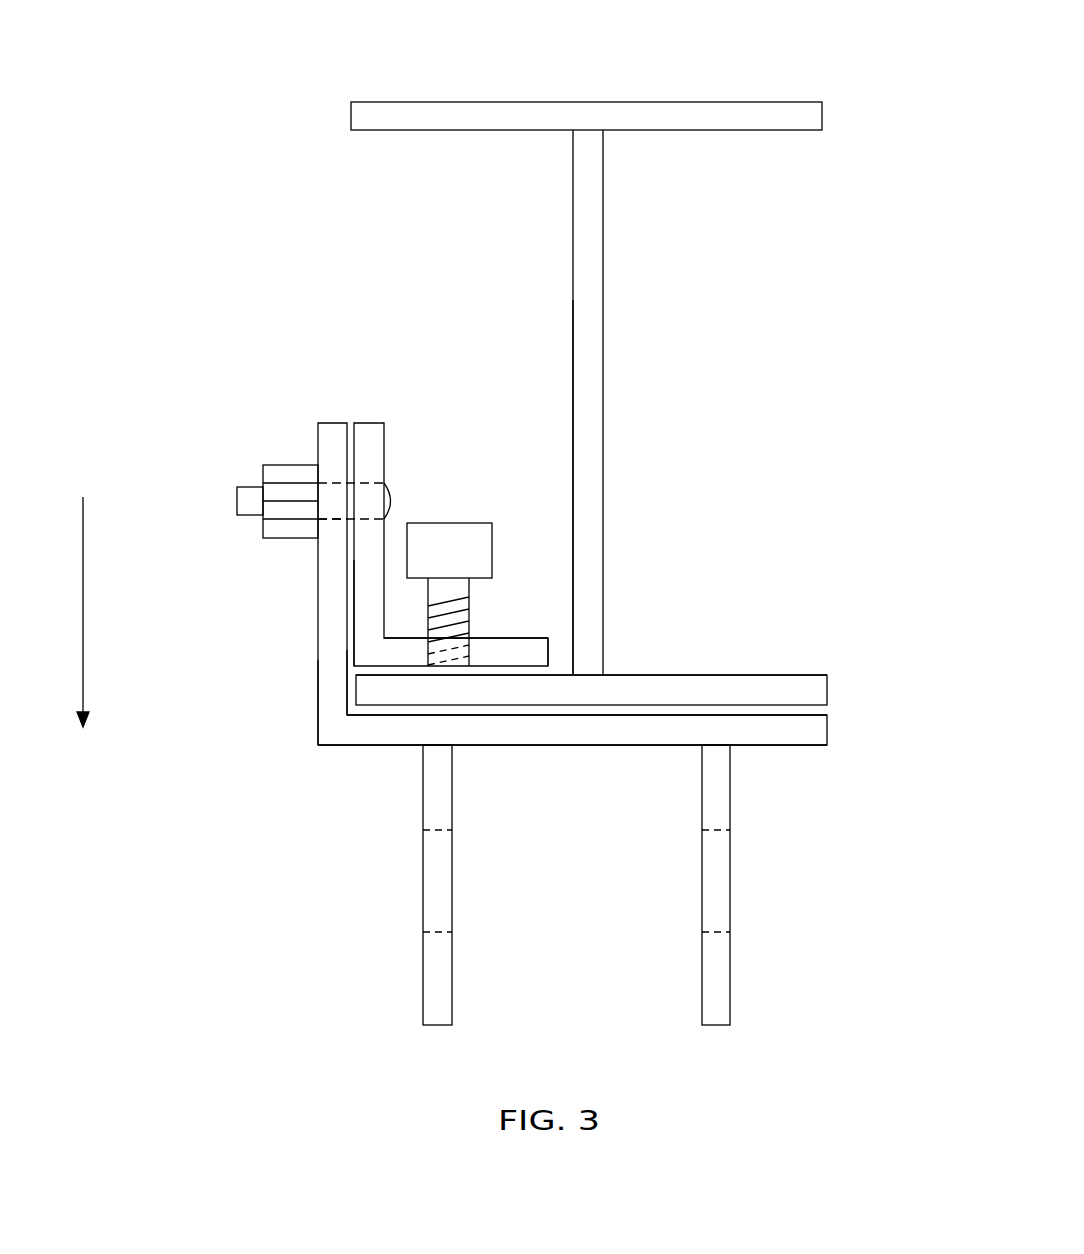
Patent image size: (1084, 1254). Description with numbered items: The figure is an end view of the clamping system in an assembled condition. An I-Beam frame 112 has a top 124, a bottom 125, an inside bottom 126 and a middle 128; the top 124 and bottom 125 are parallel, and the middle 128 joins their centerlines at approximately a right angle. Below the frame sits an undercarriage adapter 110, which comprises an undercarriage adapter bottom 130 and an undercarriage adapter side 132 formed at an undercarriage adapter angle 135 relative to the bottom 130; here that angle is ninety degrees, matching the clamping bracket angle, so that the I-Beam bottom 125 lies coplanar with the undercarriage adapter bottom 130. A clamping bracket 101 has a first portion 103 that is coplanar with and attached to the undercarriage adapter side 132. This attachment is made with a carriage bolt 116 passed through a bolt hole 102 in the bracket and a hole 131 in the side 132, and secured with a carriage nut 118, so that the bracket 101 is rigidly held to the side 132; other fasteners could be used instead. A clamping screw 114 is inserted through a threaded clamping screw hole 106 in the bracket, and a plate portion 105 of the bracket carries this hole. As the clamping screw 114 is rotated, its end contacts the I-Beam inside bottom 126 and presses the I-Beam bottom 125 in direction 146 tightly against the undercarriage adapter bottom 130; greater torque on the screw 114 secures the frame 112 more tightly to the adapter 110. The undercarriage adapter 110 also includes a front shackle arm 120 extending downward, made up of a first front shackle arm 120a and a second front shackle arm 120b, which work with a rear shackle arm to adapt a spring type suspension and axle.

The clamping bracket 101 is at (368, 423).
The bolt hole 102 is at (375, 483).
The first portion 103 is at (378, 608).
The horizontal plate of bracket 105 is at (549, 654).
The threaded clamping screw hole 106 is at (472, 647).
The undercarriage adapter 110 is at (330, 670).
The I-Beam frame 112 is at (603, 331).
The clamping screw 114 is at (447, 523).
The carriage bolt 116 is at (237, 505).
The carriage nut 118 is at (290, 465).
The front shackle arm 120 is at (576, 885).
The first front shackle arm 120a is at (452, 858).
The second front shackle arm 120b is at (702, 903).
The top 124 is at (623, 102).
The bottom 125 is at (827, 703).
The inside bottom 126 is at (712, 675).
The middle 128 is at (603, 510).
The undercarriage adapter bottom 130 is at (787, 745).
The hole 131 is at (338, 519).
The undercarriage adapter side 132 is at (318, 716).
The undercarriage adapter angle 135 is at (353, 643).
The direction 146 is at (88, 607).